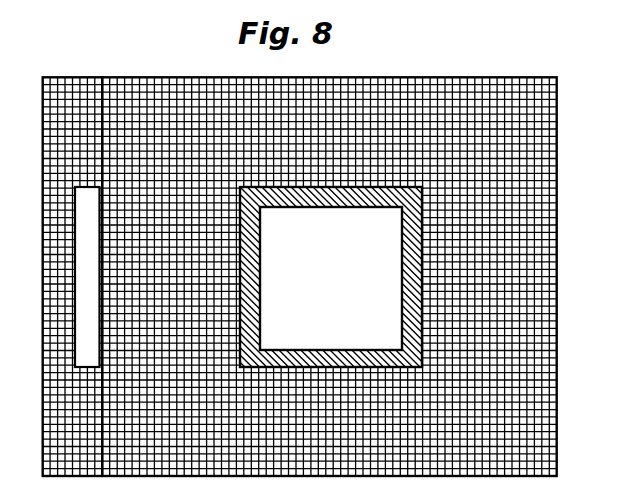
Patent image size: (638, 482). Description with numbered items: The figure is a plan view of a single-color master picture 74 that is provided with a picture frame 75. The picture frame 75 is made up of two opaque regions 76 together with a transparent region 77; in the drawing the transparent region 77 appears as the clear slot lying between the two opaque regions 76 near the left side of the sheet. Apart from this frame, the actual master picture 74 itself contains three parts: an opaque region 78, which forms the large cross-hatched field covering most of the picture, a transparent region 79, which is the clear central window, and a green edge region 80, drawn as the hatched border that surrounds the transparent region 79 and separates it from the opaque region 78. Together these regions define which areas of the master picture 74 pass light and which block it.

The master picture 74 is at (382, 77).
The picture frame 75 is at (70, 77).
The opaque regions 76 is at (70, 140).
The transparent region 77 is at (88, 266).
The opaque region 78 is at (513, 132).
The transparent region 79 is at (377, 319).
The green edge region 80 is at (410, 271).